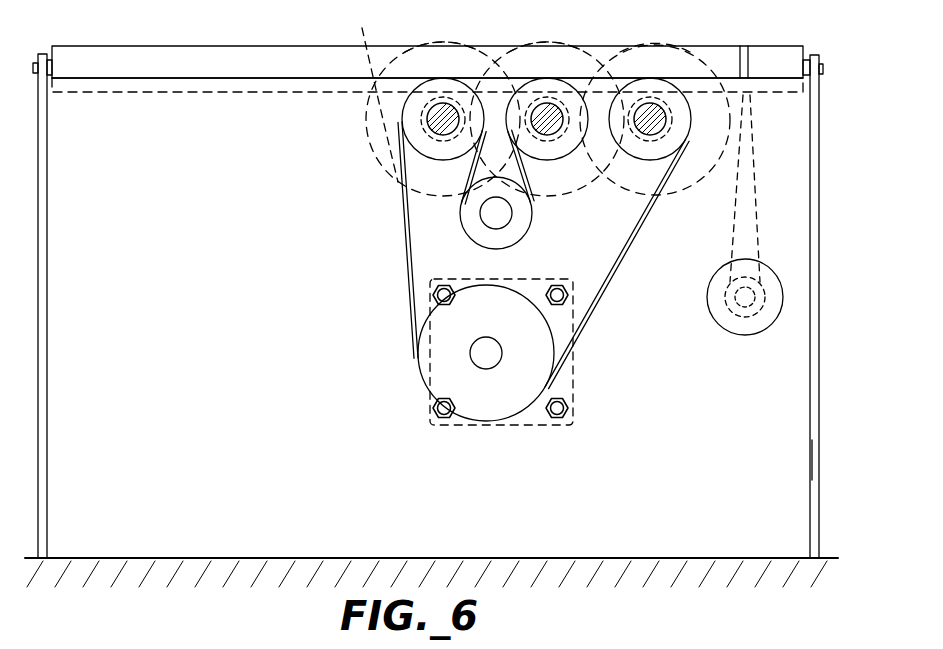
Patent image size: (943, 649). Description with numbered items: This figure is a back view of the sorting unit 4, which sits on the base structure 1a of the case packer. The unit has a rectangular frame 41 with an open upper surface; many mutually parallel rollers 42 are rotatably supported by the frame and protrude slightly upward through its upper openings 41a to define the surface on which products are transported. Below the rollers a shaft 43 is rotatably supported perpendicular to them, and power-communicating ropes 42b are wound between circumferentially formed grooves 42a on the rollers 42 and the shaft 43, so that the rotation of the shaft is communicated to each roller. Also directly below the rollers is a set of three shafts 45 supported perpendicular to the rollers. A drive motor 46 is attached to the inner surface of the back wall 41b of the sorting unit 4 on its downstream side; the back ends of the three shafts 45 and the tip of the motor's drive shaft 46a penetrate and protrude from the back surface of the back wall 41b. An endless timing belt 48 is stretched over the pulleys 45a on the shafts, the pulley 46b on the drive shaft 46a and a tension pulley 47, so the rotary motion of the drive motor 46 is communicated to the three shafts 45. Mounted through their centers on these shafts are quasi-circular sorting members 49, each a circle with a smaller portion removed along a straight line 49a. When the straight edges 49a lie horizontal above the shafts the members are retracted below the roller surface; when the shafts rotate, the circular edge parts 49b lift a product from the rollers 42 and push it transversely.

The base structure 1a is at (823, 558).
The sorting unit 4 is at (820, 92).
The rectangular frame 41 is at (820, 413).
The upper openings 41a is at (274, 77).
The back wall 41b is at (803, 462).
The rollers 42 is at (207, 53).
The grooves 42a is at (748, 47).
The power-communicating ropes 42b is at (758, 210).
The shaft 43 is at (742, 315).
The shafts 45 is at (443, 104).
The pulleys 45a is at (460, 145).
The drive motor 46 is at (565, 365).
The drive shaft 46a is at (484, 366).
The pulley 46b is at (428, 363).
The tension pulley 47 is at (515, 232).
The endless timing belt 48 is at (412, 258).
The sorting members 49 is at (397, 163).
The straight line 49a is at (366, 40).
The circular edge parts 49b is at (446, 38).